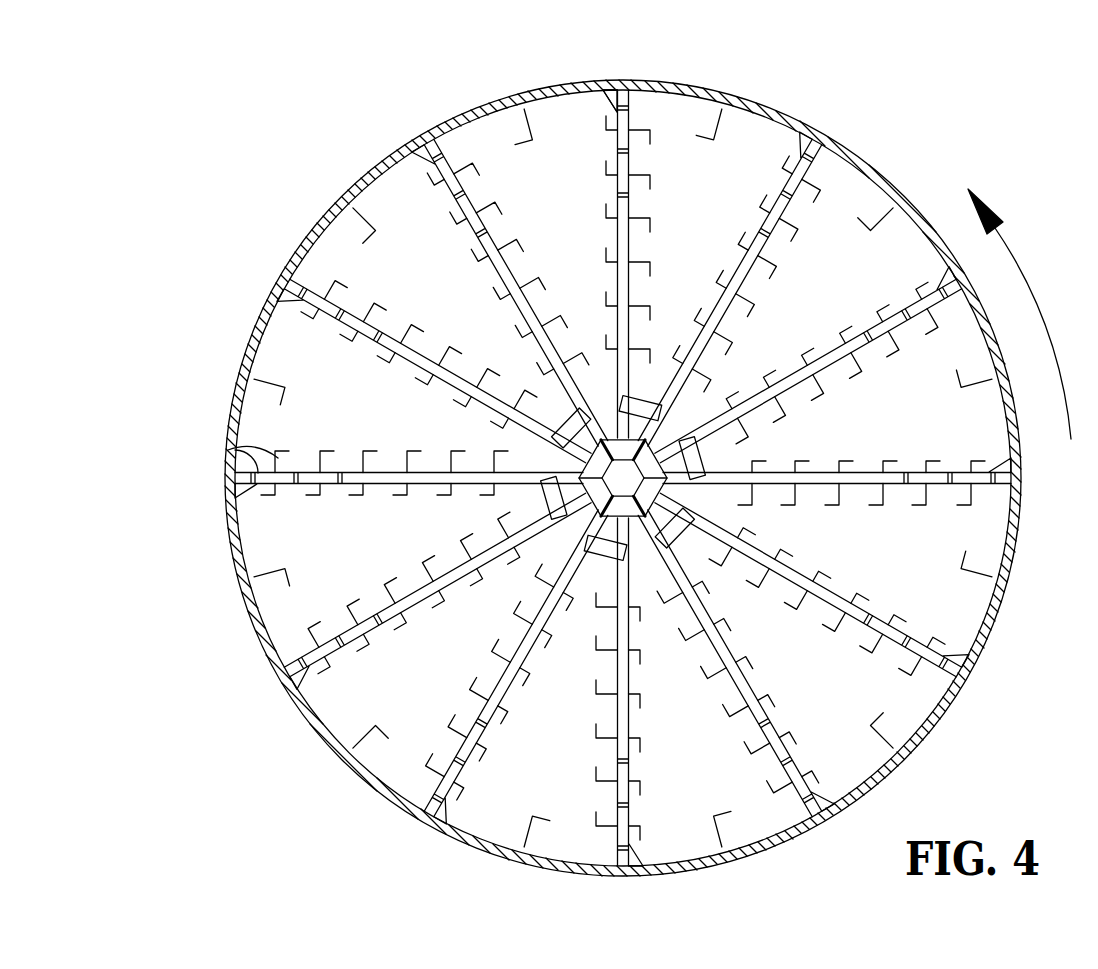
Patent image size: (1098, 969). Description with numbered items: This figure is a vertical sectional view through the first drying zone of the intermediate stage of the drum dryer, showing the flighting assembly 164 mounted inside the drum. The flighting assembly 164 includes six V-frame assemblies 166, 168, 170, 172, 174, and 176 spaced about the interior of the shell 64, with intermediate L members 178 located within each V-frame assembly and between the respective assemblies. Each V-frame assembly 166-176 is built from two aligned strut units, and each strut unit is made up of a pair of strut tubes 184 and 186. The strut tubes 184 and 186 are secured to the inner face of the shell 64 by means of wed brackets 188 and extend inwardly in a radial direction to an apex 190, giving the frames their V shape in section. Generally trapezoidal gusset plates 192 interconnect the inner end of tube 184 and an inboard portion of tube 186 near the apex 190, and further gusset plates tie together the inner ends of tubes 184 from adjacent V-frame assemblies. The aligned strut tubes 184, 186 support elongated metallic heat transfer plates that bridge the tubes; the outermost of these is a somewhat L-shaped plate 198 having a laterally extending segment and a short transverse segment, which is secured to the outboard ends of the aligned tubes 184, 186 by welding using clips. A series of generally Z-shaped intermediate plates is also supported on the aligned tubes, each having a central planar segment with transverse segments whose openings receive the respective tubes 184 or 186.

The shell 64 is at (862, 158).
The flighting assembly 164 is at (400, 186).
The V-frame assembly 166 is at (438, 294).
The V-frame assembly 168 is at (687, 225).
The V-frame assembly 170 is at (825, 423).
The V-frame assembly 172 is at (808, 656).
The V-frame assembly 174 is at (558, 699).
The V-frame assembly 176 is at (406, 532).
The intermediate L member 178 is at (978, 568).
The strut tube 184 is at (617, 195).
The strut tube 186 is at (748, 268).
The wed bracket 188 is at (608, 97).
The apex 190 is at (586, 587).
The trapezoidal gusset plate 192 is at (650, 398).
The L-shaped plate 198 is at (235, 450).